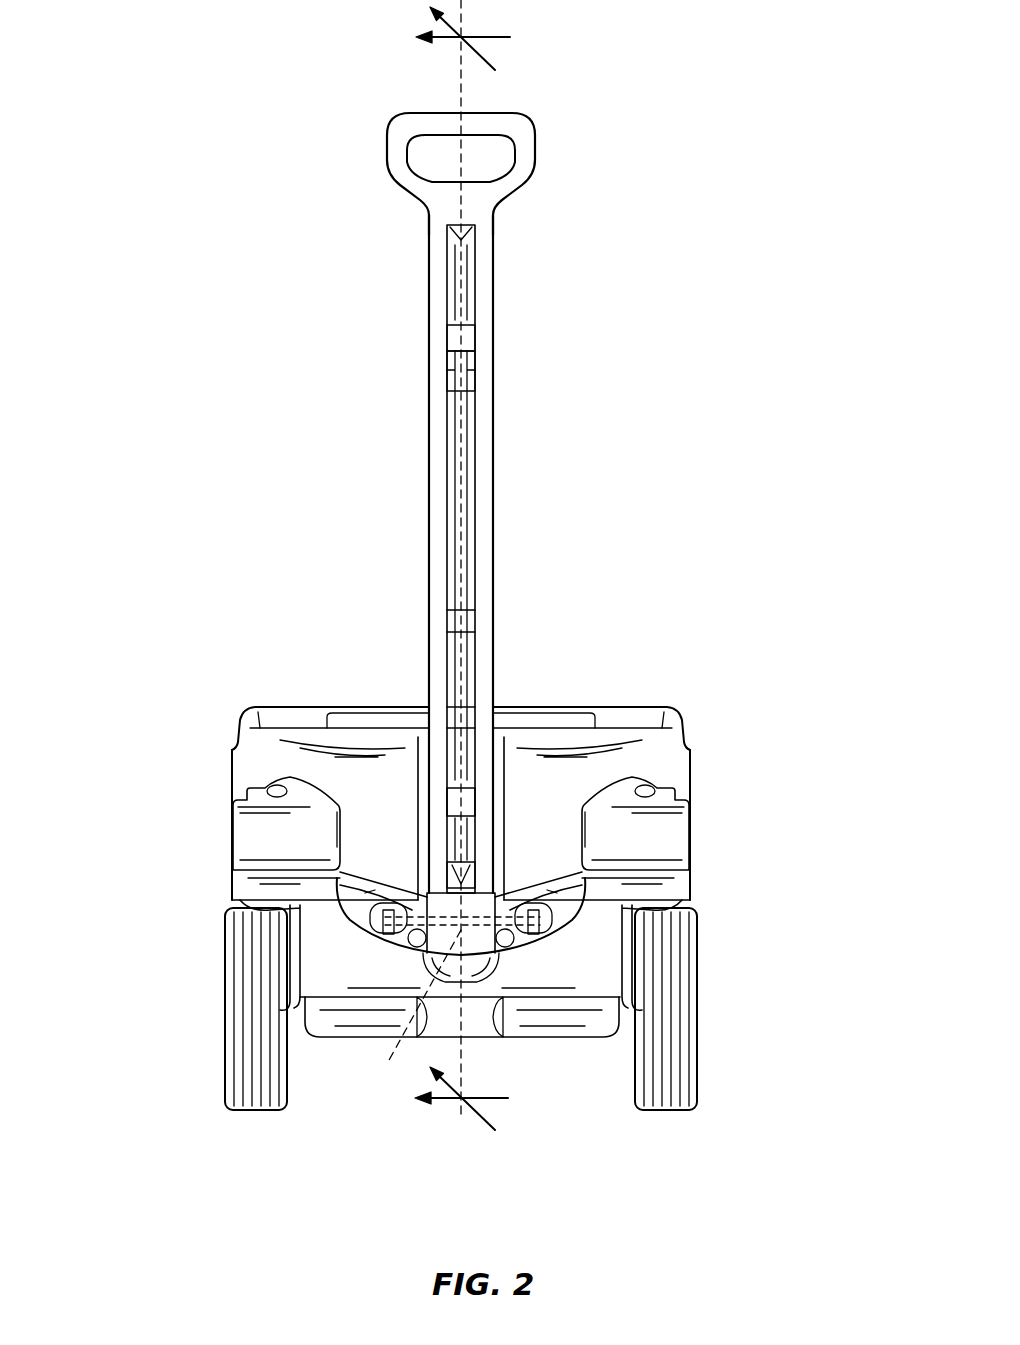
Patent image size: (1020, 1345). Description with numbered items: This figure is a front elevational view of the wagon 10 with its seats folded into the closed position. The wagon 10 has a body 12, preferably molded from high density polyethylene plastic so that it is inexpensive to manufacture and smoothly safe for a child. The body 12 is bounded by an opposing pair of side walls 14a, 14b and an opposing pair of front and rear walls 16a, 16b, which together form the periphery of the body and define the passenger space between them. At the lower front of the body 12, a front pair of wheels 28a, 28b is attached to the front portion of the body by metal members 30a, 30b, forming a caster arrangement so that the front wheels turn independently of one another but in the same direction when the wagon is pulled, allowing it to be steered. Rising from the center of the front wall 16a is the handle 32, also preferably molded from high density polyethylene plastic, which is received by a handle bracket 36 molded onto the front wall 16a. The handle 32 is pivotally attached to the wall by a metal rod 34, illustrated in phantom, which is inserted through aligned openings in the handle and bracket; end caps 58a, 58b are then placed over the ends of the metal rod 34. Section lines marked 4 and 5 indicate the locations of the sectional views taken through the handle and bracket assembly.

The wagon 10 is at (160, 80).
The body 12 is at (318, 648).
The side wall 14a is at (690, 775).
The side wall 14b is at (232, 775).
The front wall 16a is at (570, 814).
The rear wall 16b is at (570, 708).
The front wheel 28a is at (665, 1112).
The front wheel 28b is at (256, 1112).
The metal member 30a is at (680, 893).
The metal member 30b is at (245, 893).
The handle 32 is at (430, 243).
The metal rod 34 is at (418, 1014).
The handle bracket 36 is at (395, 895).
The end cap 58a is at (560, 905).
The end cap 58b is at (362, 905).
The section line 4 is at (472, 583).
The section line 5 is at (474, 569).